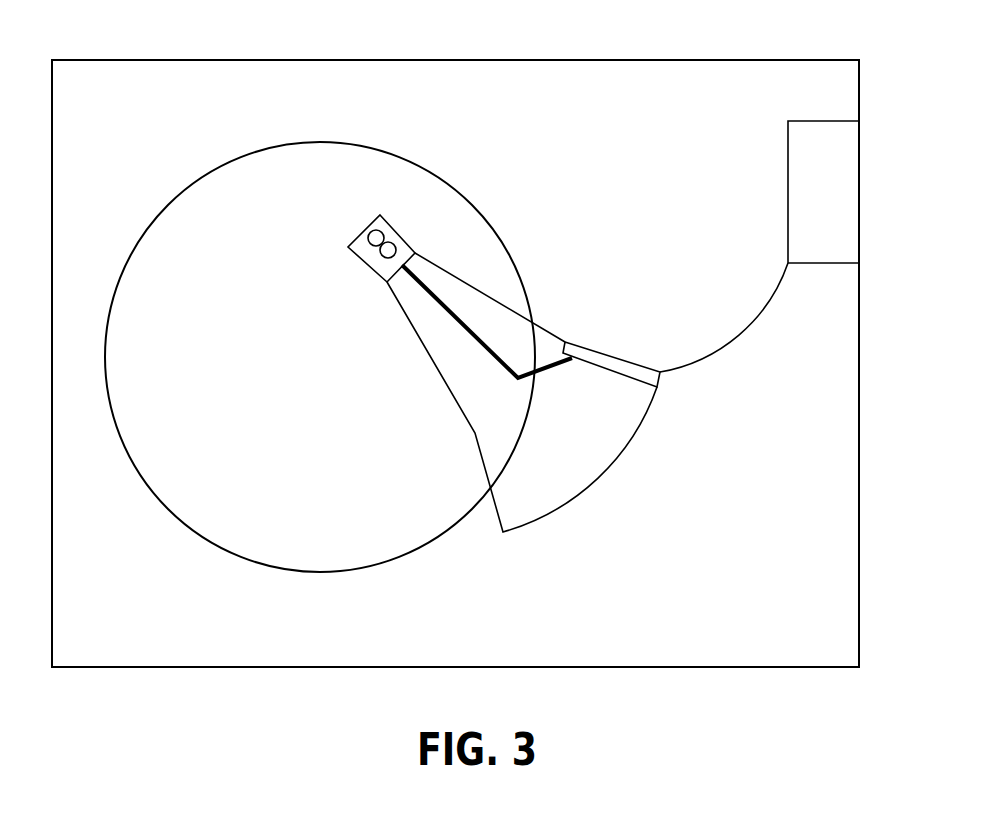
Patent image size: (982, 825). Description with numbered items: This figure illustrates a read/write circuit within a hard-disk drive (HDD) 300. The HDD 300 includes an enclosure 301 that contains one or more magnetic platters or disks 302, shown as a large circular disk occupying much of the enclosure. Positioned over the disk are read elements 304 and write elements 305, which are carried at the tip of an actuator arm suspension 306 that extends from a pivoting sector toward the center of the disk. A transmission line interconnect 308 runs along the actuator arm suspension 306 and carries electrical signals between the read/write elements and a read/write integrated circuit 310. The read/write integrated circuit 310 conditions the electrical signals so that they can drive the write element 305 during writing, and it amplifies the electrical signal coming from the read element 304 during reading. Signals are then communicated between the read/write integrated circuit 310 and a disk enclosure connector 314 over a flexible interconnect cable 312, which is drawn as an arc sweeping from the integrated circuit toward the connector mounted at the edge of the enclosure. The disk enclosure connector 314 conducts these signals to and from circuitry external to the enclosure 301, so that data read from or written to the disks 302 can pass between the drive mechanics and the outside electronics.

The hard-disk drive 300 is at (484, 43).
The enclosure 301 is at (753, 60).
The magnetic platters or disks 302 is at (457, 192).
The read elements 304 is at (363, 245).
The write elements 305 is at (395, 243).
The actuator arm suspension 306 is at (588, 487).
The transmission line interconnect 308 is at (472, 337).
The read/write integrated circuit 310 is at (603, 354).
The flexible interconnect cable 312 is at (726, 347).
The disk enclosure connector 314 is at (793, 200).